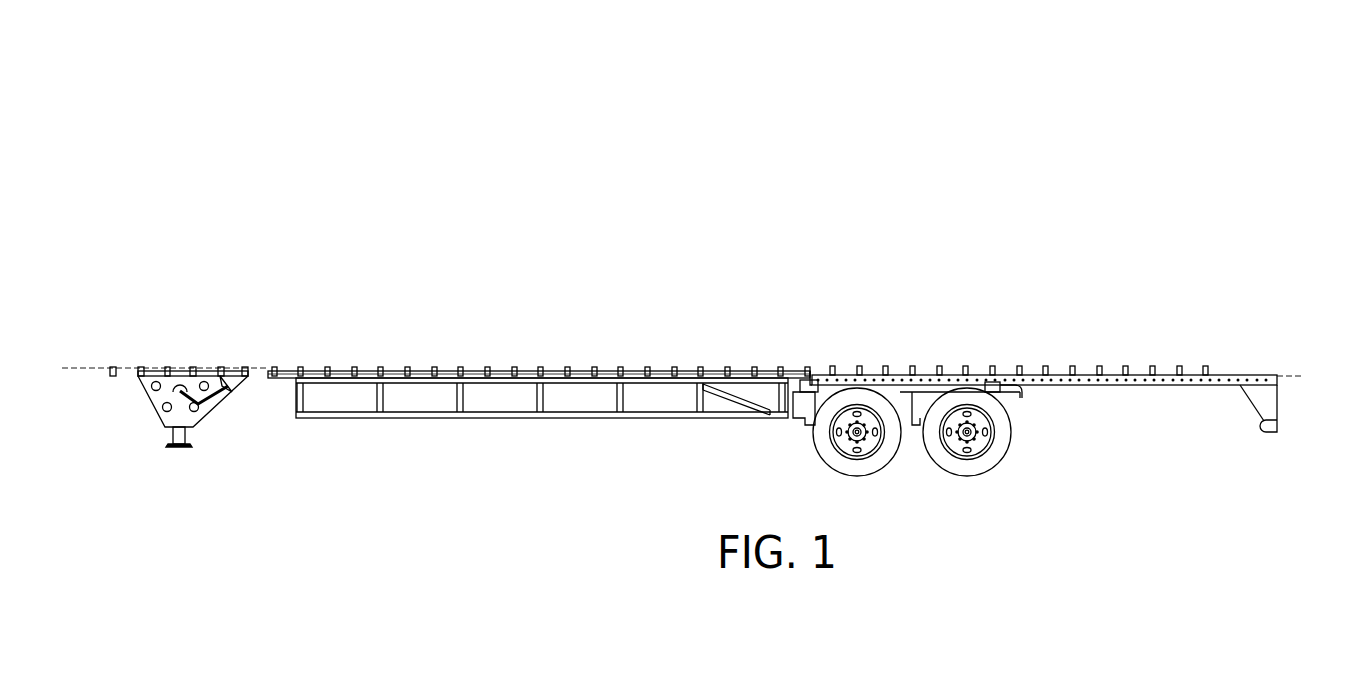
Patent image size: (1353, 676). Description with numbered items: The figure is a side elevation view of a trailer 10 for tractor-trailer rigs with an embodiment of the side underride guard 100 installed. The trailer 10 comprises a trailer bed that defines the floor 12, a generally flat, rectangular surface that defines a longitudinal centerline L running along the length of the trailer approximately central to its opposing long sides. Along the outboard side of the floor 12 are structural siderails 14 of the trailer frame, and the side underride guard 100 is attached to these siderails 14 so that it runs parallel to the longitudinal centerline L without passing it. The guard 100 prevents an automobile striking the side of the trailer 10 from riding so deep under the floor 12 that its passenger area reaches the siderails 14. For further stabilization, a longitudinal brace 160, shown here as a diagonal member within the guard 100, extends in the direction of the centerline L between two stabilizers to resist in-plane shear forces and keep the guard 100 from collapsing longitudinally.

The trailer 10 is at (700, 272).
The floor 12 is at (1053, 386).
The structural siderail 14 is at (822, 372).
The side underride guard 100 is at (497, 432).
The longitudinal brace 160 is at (738, 397).
The longitudinal centerline L is at (1292, 378).